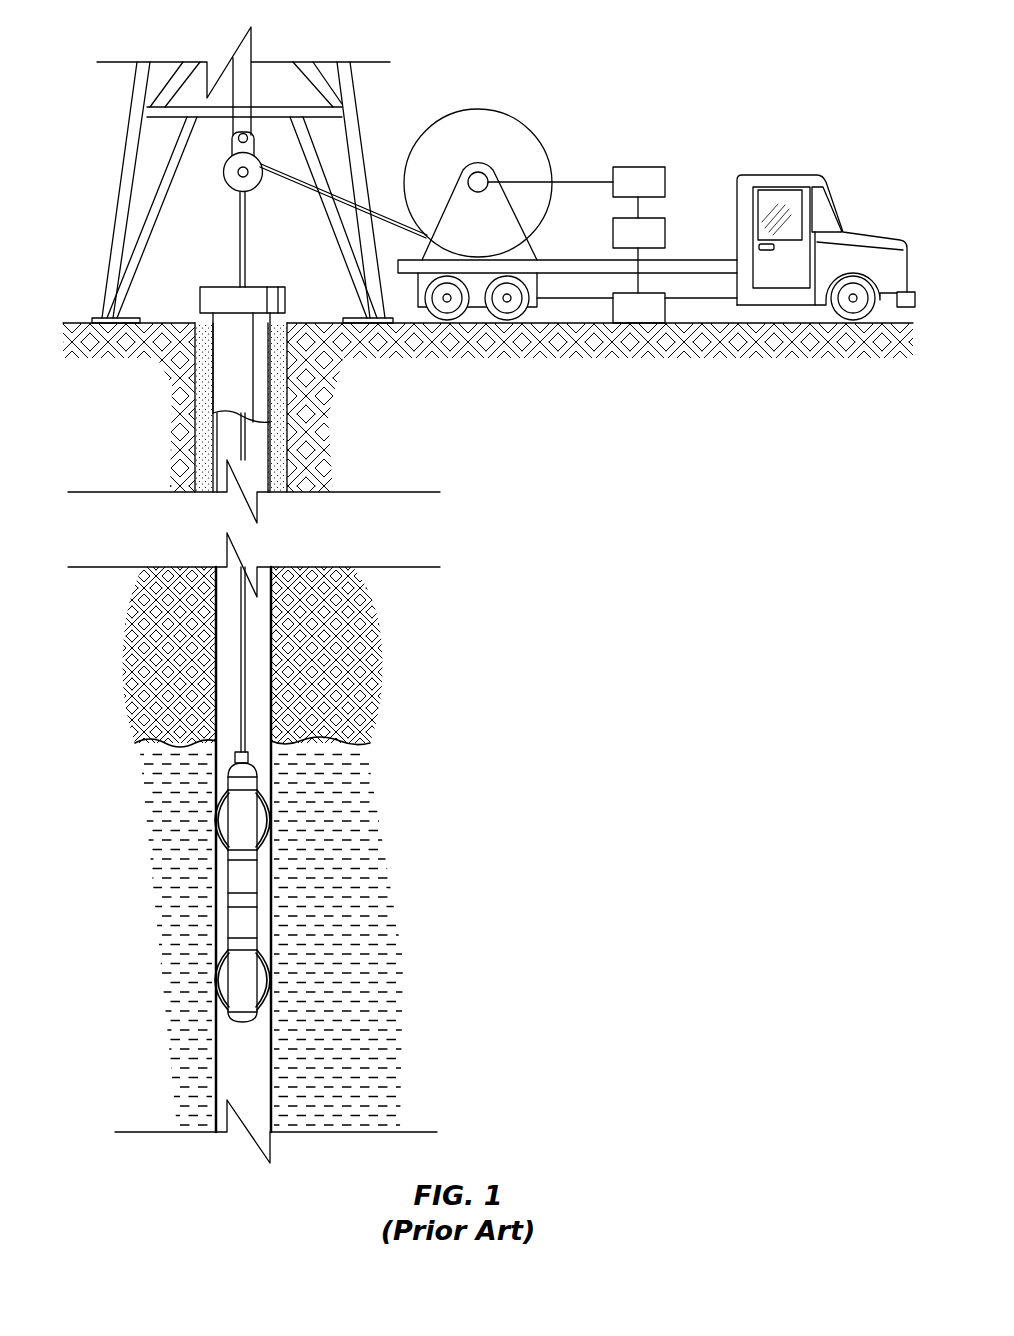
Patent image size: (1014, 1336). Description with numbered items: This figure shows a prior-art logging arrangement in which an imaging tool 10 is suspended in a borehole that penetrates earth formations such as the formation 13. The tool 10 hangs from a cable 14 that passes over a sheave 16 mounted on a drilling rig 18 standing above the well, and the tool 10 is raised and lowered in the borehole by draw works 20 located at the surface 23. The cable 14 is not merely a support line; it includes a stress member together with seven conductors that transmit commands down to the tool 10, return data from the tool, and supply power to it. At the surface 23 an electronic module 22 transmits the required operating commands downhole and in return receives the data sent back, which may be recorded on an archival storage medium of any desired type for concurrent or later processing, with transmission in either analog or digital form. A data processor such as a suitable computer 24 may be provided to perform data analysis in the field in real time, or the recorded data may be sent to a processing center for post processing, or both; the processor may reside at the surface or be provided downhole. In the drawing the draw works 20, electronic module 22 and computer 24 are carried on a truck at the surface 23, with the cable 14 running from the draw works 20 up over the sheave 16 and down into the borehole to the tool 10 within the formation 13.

The imaging tool 10 is at (257, 882).
The earth formations 13 is at (412, 692).
The cable 14 is at (240, 260).
The sheave 16 is at (222, 172).
The drilling rig 18 is at (129, 117).
The draw works 20 is at (478, 110).
The electronic module 22 is at (653, 167).
The surface 23 is at (82, 323).
The computer 24 is at (653, 218).